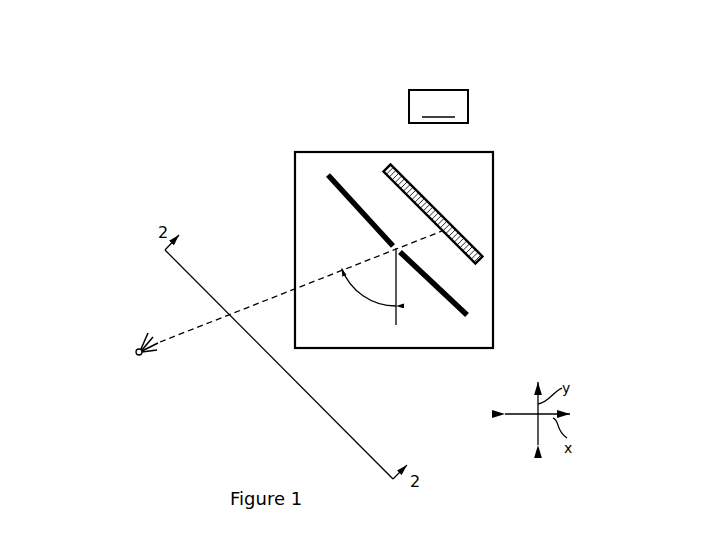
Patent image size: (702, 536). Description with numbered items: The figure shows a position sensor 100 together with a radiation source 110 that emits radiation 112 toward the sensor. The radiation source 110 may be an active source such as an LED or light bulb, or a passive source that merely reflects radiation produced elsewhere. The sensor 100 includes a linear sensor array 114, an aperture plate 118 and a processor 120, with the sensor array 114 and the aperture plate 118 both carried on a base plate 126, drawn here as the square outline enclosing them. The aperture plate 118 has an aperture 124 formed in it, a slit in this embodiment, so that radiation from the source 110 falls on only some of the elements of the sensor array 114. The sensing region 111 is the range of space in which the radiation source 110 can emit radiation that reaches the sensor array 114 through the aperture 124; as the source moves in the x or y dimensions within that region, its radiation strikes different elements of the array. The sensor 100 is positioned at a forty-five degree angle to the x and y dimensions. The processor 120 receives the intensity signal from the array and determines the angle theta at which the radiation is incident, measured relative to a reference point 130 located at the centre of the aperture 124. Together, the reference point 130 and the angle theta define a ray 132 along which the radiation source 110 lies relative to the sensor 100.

The position sensor 100 is at (253, 122).
The radiation source 110 is at (137, 355).
The sensing region 111 is at (258, 414).
The radiation 112 is at (149, 357).
The linear sensor array 114 is at (442, 211).
The aperture plate 118 is at (347, 205).
The processor 120 is at (404, 176).
The aperture 124 is at (394, 238).
The base plate 126 is at (480, 295).
The reference point 130 is at (344, 191).
The ray 132 is at (193, 329).